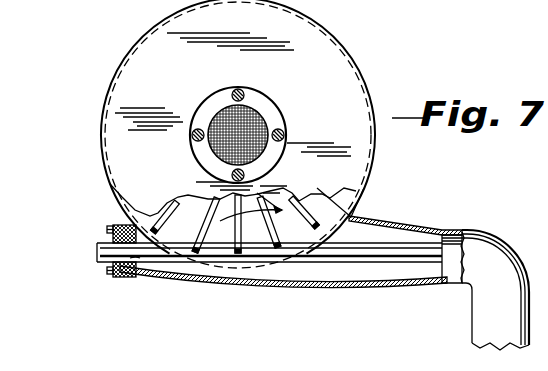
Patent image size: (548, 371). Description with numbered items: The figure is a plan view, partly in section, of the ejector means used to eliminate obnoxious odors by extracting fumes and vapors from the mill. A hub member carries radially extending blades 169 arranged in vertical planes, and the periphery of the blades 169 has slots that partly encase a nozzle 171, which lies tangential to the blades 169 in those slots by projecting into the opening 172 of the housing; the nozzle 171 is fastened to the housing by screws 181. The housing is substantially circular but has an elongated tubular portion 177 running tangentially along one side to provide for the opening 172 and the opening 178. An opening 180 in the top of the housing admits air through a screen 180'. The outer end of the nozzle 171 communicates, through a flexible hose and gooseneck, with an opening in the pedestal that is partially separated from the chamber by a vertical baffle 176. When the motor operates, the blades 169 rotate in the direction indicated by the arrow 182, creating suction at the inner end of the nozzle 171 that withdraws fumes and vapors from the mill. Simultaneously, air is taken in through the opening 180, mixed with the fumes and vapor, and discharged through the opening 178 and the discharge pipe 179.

The radially extending blades 169 is at (110, 184).
The nozzle 171 is at (178, 256).
The opening 172 is at (132, 258).
The vertical baffle 176 is at (130, 49).
The elongated tubular portion 177 is at (374, 283).
The opening 178 is at (418, 229).
The discharge pipe 179 is at (470, 233).
The opening 180 is at (268, 129).
The screen 180' is at (241, 126).
The screws 181 is at (110, 228).
The arrow 182 is at (250, 196).